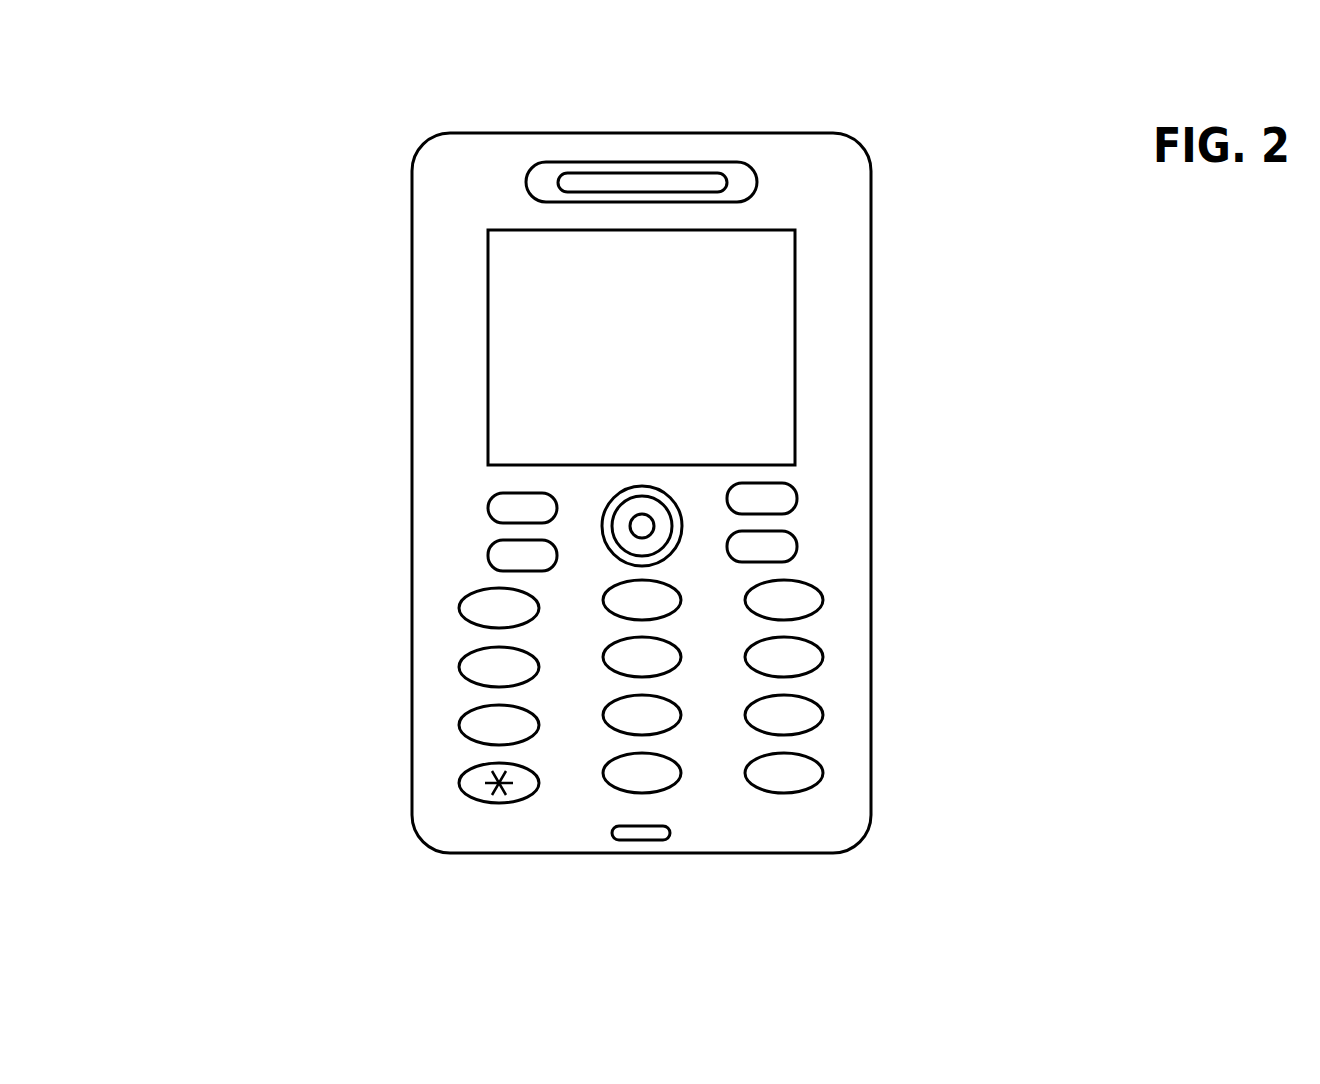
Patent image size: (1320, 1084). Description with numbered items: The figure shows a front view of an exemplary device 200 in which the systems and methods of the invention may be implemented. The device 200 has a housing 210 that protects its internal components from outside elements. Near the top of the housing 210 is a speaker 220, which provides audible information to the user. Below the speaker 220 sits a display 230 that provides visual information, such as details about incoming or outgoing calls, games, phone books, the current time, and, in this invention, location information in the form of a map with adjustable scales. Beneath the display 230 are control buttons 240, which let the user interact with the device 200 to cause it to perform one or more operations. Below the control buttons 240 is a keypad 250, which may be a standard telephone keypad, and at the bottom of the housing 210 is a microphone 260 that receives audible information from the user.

The device 200 is at (240, 110).
The housing 210 is at (412, 490).
The speaker 220 is at (757, 181).
The display 230 is at (795, 347).
The control buttons 240 is at (813, 475).
The keypad 250 is at (835, 793).
The microphone 260 is at (645, 840).